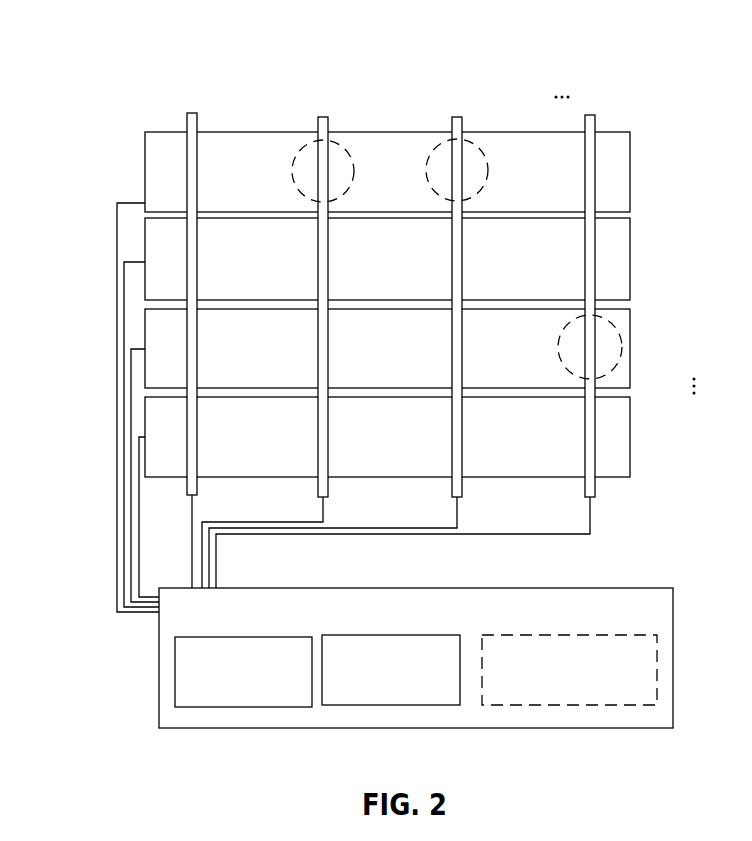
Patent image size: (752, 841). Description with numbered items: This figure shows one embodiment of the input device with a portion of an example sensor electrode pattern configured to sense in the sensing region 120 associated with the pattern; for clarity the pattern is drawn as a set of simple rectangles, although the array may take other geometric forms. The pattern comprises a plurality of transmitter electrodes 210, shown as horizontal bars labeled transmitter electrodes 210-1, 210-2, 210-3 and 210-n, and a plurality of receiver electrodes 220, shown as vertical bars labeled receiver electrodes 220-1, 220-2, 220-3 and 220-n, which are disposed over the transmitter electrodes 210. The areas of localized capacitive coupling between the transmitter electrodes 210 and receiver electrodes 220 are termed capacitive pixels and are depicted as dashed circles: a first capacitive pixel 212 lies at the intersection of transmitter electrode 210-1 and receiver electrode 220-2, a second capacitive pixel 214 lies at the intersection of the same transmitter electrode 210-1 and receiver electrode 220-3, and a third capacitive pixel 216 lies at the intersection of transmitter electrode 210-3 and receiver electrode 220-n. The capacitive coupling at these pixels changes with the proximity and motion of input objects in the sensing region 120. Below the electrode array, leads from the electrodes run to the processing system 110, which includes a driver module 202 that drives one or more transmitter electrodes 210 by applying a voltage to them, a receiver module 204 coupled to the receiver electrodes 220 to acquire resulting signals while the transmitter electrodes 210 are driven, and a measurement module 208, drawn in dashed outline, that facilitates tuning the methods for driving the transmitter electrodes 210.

The sensing region 120 is at (124, 84).
The transmitter electrodes 210 is at (92, 122).
The transmitter electrode 210-1 is at (631, 166).
The transmitter electrode 210-2 is at (631, 256).
The transmitter electrode 210-3 is at (631, 345).
The transmitter electrode 210-n is at (631, 435).
The receiver electrodes 220 is at (603, 85).
The receiver electrode 220-1 is at (189, 112).
The receiver electrode 220-2 is at (321, 116).
The receiver electrode 220-3 is at (455, 116).
The receiver electrode 220-n is at (588, 114).
The first capacitive pixel 212 is at (342, 194).
The second capacitive pixel 214 is at (473, 197).
The third capacitive pixel 216 is at (568, 368).
The processing system 110 is at (416, 658).
The driver module 202 is at (243, 672).
The receiver module 204 is at (391, 670).
The measurement module 208 is at (569, 670).